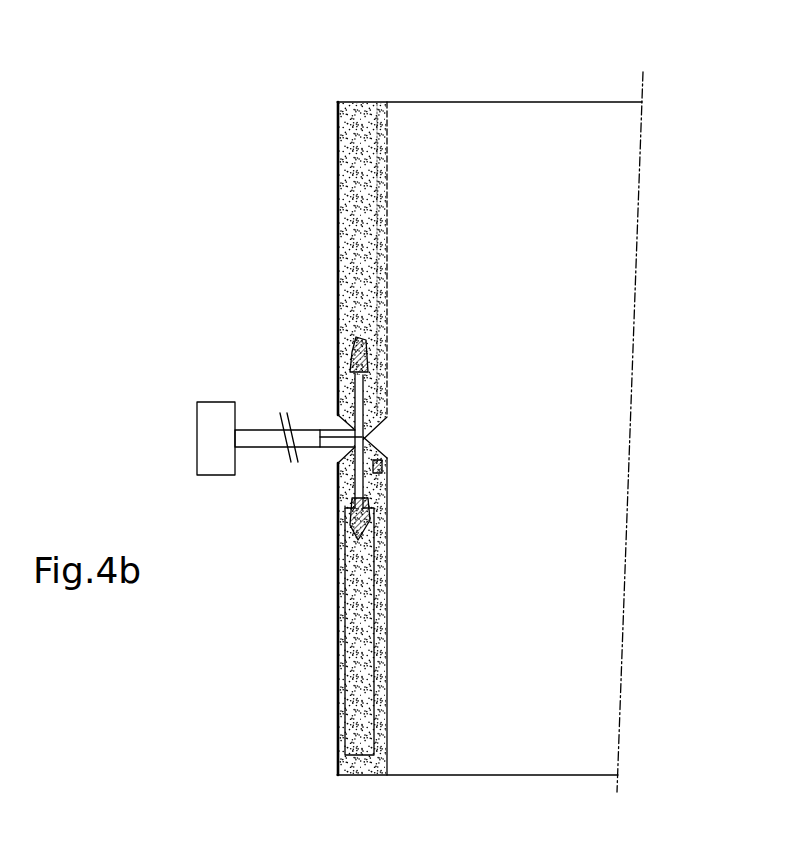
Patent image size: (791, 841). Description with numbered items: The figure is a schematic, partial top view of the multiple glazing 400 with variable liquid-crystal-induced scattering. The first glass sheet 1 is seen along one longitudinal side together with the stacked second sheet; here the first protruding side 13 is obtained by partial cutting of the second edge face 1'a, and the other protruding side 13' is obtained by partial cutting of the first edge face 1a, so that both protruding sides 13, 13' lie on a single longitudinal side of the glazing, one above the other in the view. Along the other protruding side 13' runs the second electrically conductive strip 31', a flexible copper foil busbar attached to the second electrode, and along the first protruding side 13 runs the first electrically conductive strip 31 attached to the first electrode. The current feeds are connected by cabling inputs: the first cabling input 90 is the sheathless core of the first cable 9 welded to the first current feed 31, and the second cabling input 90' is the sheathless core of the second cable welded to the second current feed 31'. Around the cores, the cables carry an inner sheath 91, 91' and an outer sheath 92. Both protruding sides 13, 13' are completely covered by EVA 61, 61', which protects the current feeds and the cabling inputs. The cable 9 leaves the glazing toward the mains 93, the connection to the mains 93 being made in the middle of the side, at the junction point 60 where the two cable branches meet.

The first glass sheet 1 is at (521, 432).
The first edge face 1a is at (387, 352).
The second edge face 1'a is at (365, 405).
The first cable 9 is at (237, 480).
The first protruding side 13 is at (362, 640).
The other protruding side 13' is at (362, 235).
The first electrically conductive strip 31 is at (403, 631).
The second electrically conductive strip 31' is at (409, 222).
The coupling point 60 is at (377, 457).
The EVA 61 is at (419, 660).
The EVA 61' is at (424, 159).
The first cabling input 90 is at (404, 509).
The second cabling input 90' is at (330, 337).
The inner sheath 91 is at (326, 481).
The inner sheath 91' is at (323, 399).
The outer sheath 92 is at (250, 430).
The mains 93 is at (197, 420).
The multiple glazing 400 is at (182, 348).